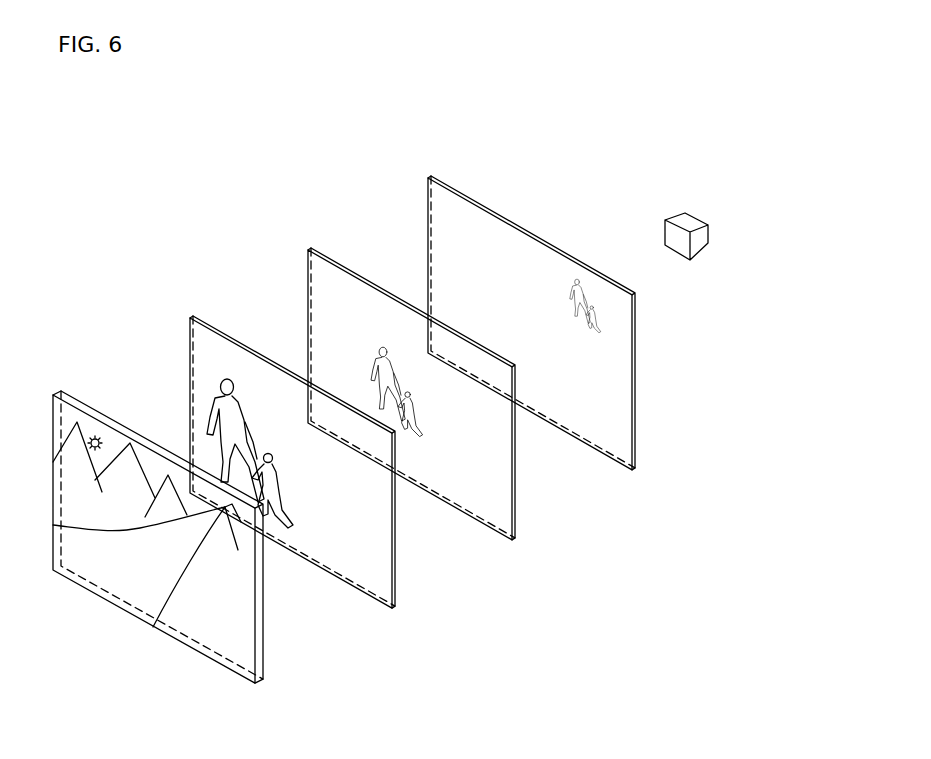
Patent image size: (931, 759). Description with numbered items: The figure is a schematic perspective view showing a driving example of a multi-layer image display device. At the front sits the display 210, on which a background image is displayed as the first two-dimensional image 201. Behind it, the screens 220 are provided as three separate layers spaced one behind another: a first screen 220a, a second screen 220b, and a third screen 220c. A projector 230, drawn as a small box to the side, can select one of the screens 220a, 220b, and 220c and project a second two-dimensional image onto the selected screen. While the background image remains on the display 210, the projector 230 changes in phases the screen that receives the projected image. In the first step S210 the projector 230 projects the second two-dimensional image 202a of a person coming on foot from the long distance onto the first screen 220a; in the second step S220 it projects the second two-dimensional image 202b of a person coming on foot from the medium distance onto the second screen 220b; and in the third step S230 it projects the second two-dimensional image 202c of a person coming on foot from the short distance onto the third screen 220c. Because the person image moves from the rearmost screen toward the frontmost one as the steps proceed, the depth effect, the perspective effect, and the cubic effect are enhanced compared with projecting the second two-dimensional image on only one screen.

The first two-dimensional image 201 is at (110, 432).
The display 210 is at (247, 595).
The screens 220 is at (420, 401).
The first screen 220a is at (580, 443).
The second screen 220b is at (505, 475).
The third screen 220c is at (388, 527).
The second two-dimensional image 202a is at (583, 277).
The second two-dimensional image 202b is at (386, 345).
The second two-dimensional image 202c is at (228, 378).
The projector 230 is at (702, 252).
The first step S210 is at (441, 155).
The second step S220 is at (314, 222).
The third step S230 is at (194, 290).